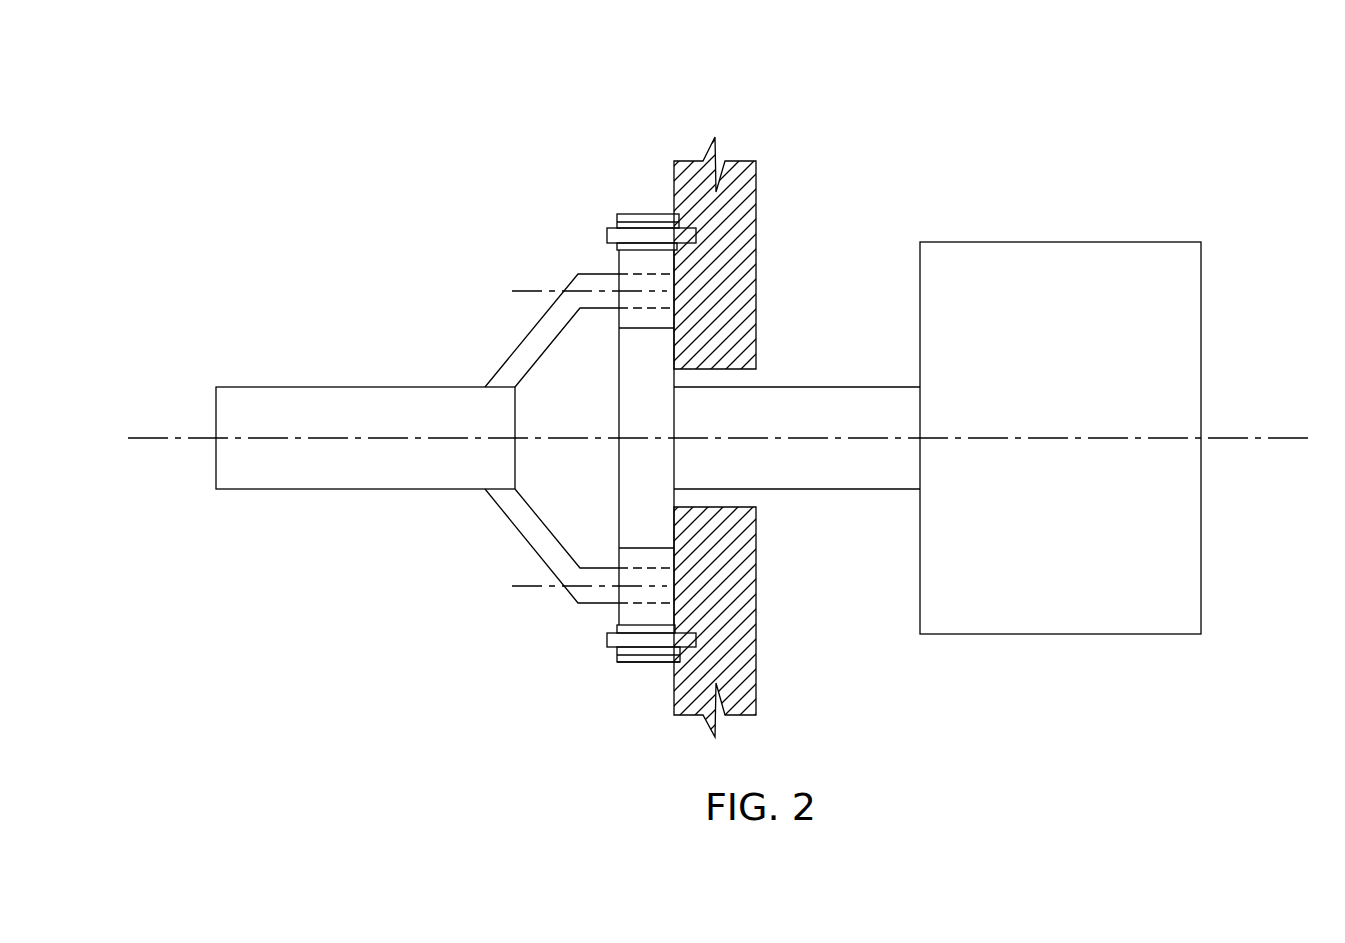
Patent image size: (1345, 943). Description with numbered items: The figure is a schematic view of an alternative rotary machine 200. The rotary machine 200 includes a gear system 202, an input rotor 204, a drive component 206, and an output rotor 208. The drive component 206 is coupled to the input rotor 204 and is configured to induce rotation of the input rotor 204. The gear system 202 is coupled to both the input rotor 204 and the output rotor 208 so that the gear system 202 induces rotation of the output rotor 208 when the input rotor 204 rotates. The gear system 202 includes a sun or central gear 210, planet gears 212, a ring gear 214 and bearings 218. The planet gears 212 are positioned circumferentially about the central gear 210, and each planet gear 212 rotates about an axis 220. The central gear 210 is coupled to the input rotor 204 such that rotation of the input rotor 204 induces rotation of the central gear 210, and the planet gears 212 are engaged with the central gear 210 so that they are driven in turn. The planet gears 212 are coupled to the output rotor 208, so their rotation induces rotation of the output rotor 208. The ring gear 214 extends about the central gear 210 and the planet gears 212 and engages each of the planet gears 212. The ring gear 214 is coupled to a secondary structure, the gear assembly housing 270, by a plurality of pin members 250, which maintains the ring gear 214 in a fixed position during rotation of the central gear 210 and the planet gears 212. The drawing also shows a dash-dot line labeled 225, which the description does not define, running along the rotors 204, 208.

The rotary machine 200 is at (1213, 110).
The gear system 202 is at (617, 200).
The input rotor 204 is at (852, 490).
The drive component 206 is at (1002, 242).
The output rotor 208 is at (248, 387).
The central gear 210 is at (627, 412).
The planet gears 212 is at (627, 318).
The ring gear 214 is at (640, 665).
The bearings 218 is at (616, 278).
The axis 220 is at (534, 290).
The axis 225 is at (143, 437).
The pin members 250 is at (640, 233).
The gear assembly housing 270 is at (757, 207).